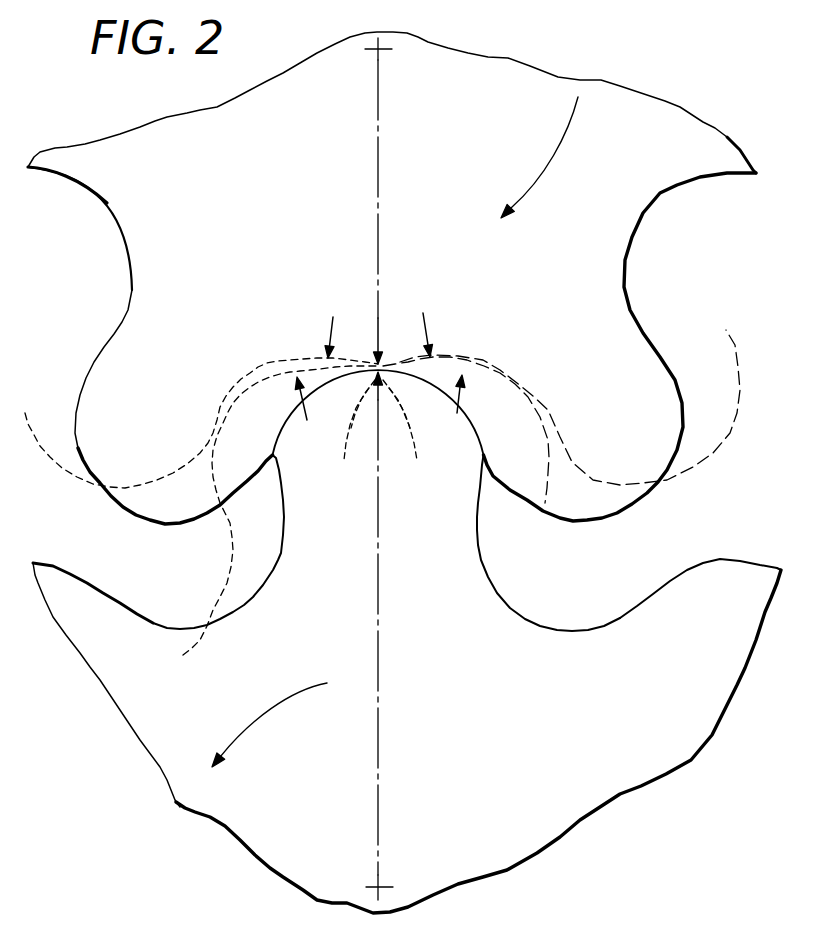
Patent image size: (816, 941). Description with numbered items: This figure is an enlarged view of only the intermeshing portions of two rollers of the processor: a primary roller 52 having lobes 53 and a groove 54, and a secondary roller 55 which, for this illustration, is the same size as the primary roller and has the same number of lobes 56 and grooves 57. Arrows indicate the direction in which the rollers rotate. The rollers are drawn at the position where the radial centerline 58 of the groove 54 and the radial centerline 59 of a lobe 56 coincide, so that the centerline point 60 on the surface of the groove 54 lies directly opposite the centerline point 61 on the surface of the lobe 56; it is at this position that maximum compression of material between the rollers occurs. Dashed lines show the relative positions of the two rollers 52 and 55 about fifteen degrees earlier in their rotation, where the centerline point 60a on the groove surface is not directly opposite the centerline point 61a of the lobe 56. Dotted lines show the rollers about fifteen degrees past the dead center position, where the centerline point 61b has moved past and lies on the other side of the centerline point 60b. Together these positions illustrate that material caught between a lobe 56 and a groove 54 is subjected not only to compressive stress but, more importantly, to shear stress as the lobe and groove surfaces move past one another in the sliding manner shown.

The primary roller 52 is at (450, 113).
The lobes 53 is at (123, 508).
The groove 54 is at (108, 205).
The secondary roller 55 is at (462, 748).
The lobes 56 is at (73, 572).
The grooves 57 is at (256, 598).
The radial centerline 58 is at (377, 172).
The radial centerline 59 is at (391, 537).
The centerline point 60 is at (377, 363).
The centerline point 60a is at (433, 357).
The centerline point 60b is at (327, 360).
The centerline point 61 is at (374, 367).
The centerline point 61a is at (463, 377).
The centerline point 61b is at (293, 373).